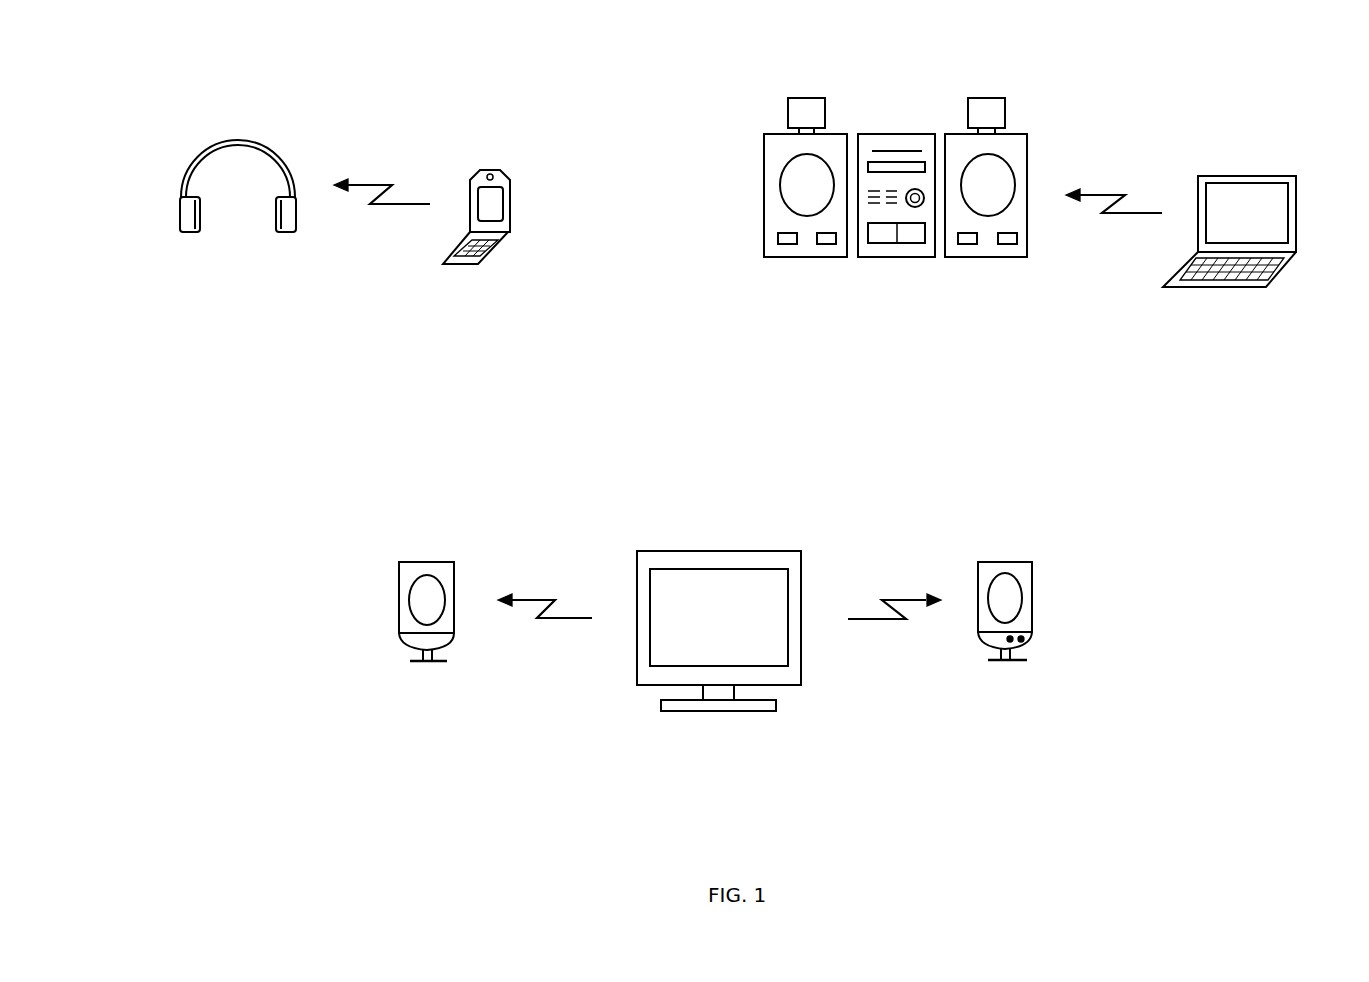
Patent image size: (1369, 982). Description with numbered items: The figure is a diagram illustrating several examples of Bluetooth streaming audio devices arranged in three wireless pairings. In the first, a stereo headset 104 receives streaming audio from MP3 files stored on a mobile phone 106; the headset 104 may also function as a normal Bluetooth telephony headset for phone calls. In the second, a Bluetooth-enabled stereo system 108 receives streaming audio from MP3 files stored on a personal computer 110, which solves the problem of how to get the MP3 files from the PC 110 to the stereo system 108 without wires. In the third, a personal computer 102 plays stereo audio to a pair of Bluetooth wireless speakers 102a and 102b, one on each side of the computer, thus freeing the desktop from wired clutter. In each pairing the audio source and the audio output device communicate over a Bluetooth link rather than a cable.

The personal computer 102 is at (719, 551).
The stereo speaker 102a is at (399, 599).
The stereo speaker 102b is at (1032, 600).
The stereo headset 104 is at (181, 215).
The mobile phone 106 is at (510, 210).
The Bluetooth-enabled stereo system 108 is at (988, 98).
The personal computer 110 is at (1296, 211).